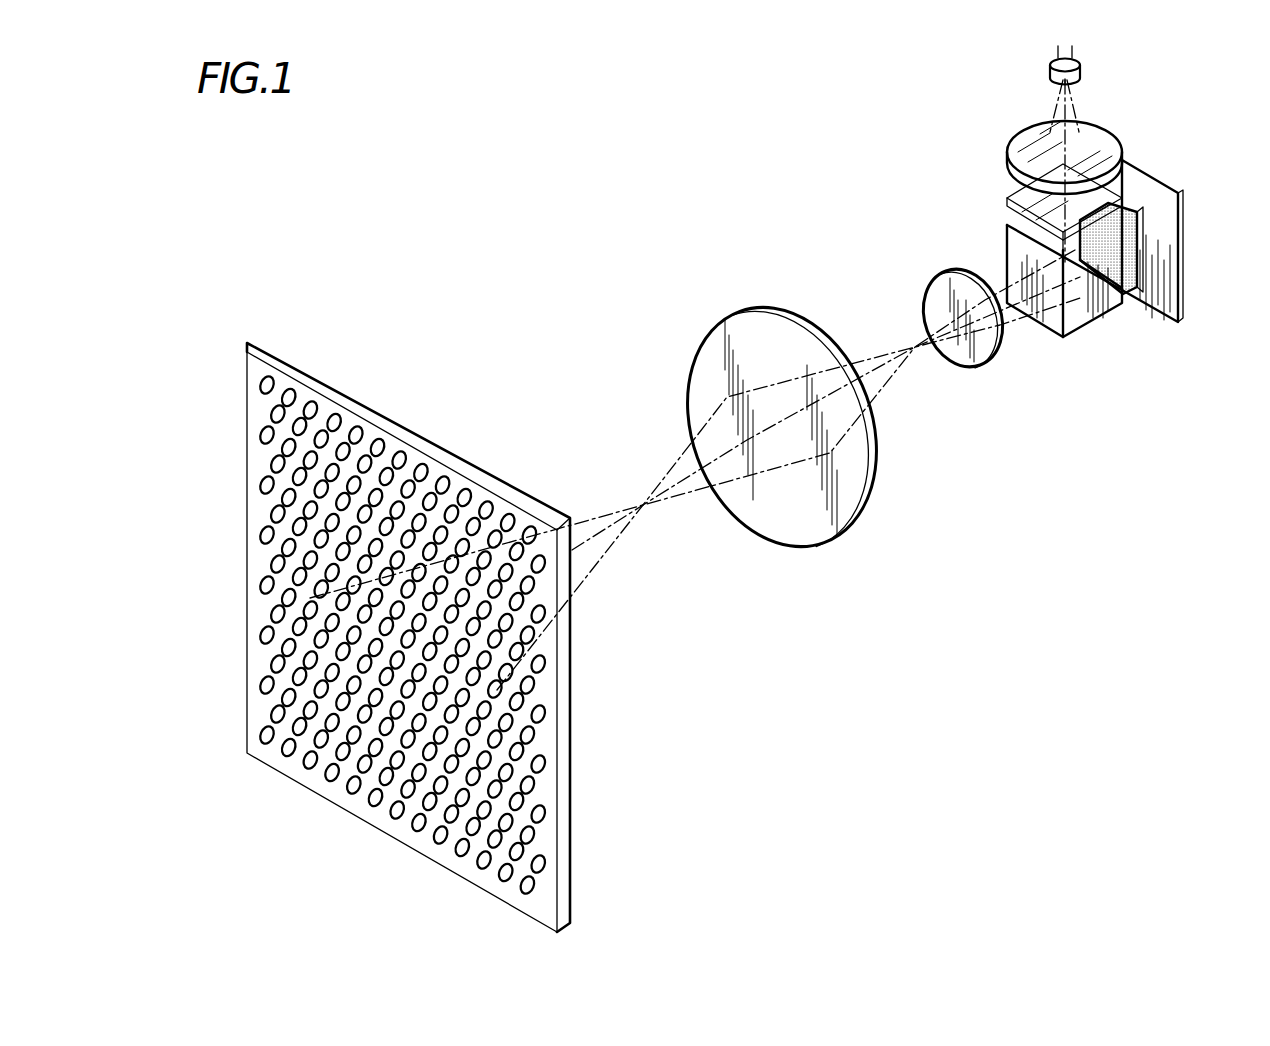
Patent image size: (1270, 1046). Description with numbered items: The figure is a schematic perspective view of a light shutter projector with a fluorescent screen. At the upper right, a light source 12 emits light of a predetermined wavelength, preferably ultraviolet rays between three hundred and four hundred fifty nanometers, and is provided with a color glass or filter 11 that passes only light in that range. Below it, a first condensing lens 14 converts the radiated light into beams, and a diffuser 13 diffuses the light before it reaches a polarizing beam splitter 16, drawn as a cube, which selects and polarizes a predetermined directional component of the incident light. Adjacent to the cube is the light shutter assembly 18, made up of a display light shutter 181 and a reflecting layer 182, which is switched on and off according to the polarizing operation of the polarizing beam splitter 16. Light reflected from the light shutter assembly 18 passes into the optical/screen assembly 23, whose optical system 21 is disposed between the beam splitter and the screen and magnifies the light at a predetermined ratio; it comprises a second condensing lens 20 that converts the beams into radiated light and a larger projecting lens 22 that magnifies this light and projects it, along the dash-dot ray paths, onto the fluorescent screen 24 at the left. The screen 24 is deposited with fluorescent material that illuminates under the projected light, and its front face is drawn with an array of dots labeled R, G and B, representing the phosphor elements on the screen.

The filter 11 is at (1032, 88).
The light source 12 is at (1100, 65).
The diffuser 13 is at (1039, 202).
The first condensing lens 14 is at (1091, 150).
The polarizing beam splitter 16 is at (1082, 288).
The light shutter assembly 18 is at (1166, 232).
The display light shutter 181 is at (1132, 222).
The reflecting layer 182 is at (1187, 241).
The second condensing lens 20 is at (978, 336).
The optical system 21 is at (966, 496).
The projecting lens 22 is at (781, 435).
The optical/screen assembly 23 is at (794, 743).
The fluorescent screen 24 is at (408, 637).
The red pixel R is at (270, 339).
The green pixel G is at (298, 353).
The blue pixel B is at (329, 370).